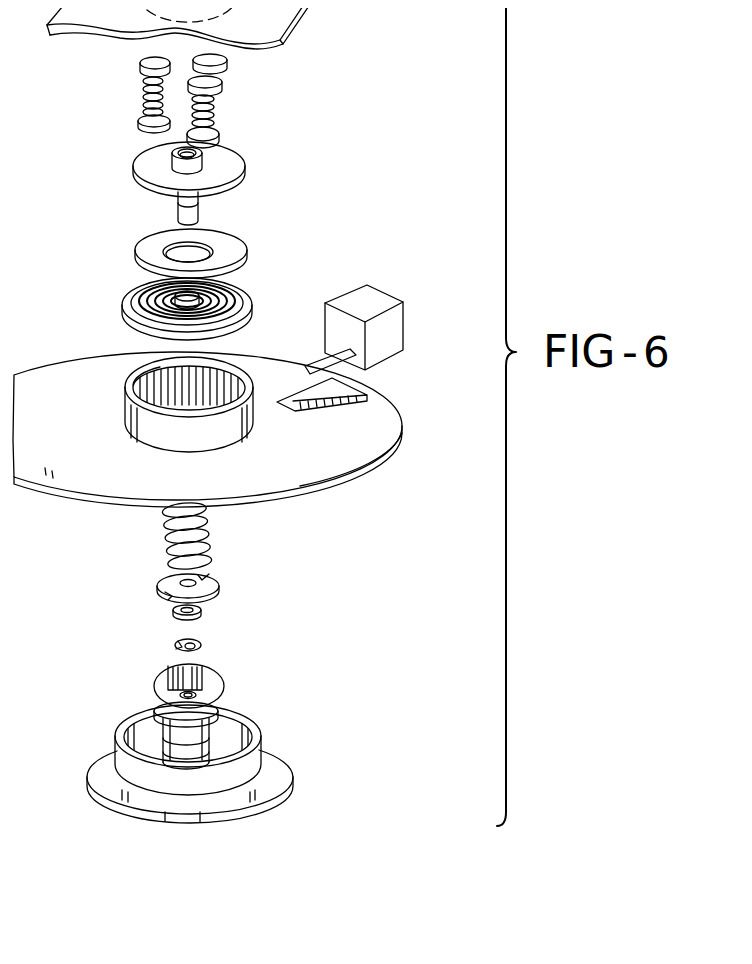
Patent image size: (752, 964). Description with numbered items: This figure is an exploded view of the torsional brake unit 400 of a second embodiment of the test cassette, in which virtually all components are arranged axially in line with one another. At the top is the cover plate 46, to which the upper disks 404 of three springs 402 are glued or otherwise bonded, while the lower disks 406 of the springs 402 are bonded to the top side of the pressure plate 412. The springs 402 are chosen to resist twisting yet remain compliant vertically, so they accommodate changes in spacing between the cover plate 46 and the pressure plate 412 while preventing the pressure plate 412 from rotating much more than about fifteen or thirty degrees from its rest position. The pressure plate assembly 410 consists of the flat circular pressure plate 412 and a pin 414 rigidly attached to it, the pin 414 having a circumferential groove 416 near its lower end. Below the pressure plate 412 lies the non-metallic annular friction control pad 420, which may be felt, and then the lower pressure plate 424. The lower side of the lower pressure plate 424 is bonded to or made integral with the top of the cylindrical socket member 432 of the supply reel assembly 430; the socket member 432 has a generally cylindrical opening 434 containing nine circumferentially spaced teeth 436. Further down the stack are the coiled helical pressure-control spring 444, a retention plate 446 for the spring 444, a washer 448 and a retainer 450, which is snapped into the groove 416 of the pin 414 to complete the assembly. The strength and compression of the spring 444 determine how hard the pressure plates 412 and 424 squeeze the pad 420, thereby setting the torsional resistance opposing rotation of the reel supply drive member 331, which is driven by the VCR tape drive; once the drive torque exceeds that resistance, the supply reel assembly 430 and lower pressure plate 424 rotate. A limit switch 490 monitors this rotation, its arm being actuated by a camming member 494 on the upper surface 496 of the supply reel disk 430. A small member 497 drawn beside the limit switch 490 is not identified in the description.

The cover plate 46 is at (287, 12).
The upper disks 404 is at (138, 66).
The springs 402 is at (140, 100).
The lower disks 406 is at (138, 125).
The pressure plate assembly 410 is at (245, 172).
The pressure plate 412 is at (135, 165).
The pin 414 is at (176, 204).
The circumferential groove 416 is at (200, 207).
The friction control pad 420 is at (246, 252).
The lower pressure plate 424 is at (247, 292).
The supply reel assembly 430 is at (48, 368).
The cylindrical socket member 432 is at (227, 430).
The cylindrical opening 434 is at (180, 377).
The teeth 436 is at (166, 366).
The limit switch 490 is at (375, 293).
The arm 497 is at (313, 363).
The camming member 494 is at (357, 392).
The upper surface 496 is at (373, 440).
The pressure-control spring 444 is at (216, 532).
The retention plate 446 is at (213, 583).
The washer 448 is at (200, 615).
The retainer 450 is at (202, 645).
The reel supply drive member 331 is at (141, 677).
The torsional brake unit 400 is at (317, 738).